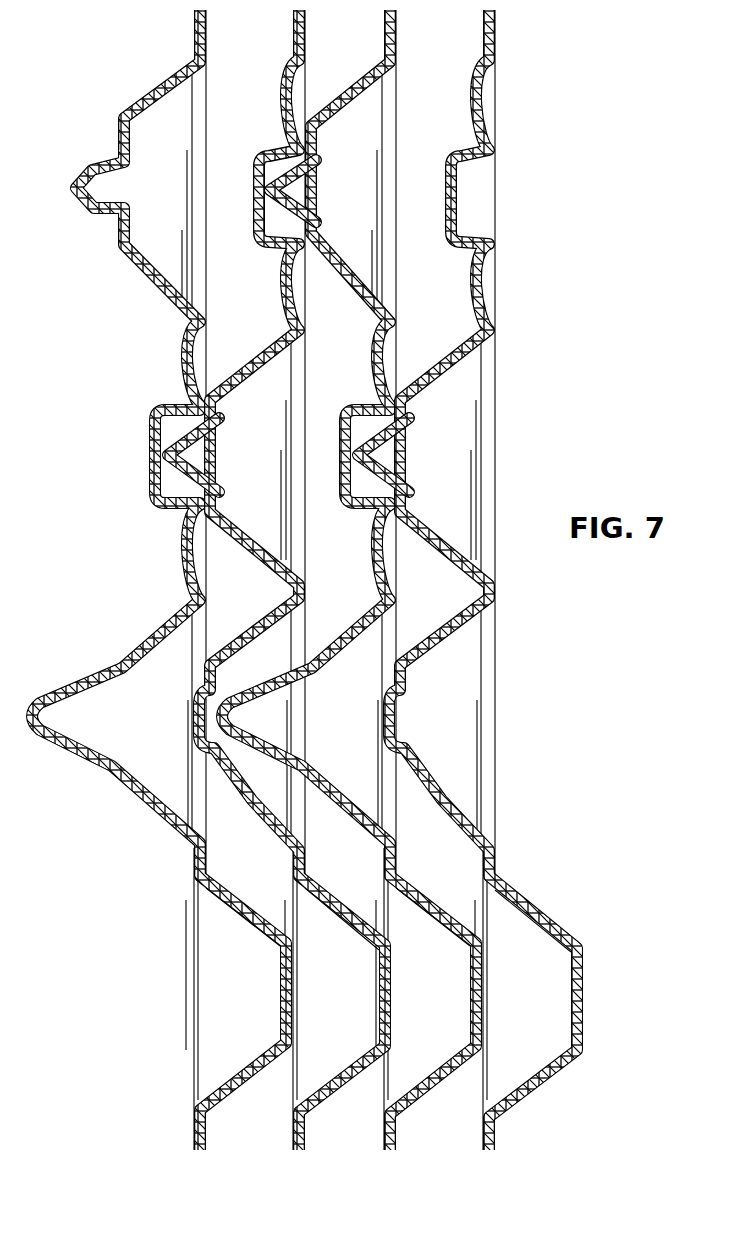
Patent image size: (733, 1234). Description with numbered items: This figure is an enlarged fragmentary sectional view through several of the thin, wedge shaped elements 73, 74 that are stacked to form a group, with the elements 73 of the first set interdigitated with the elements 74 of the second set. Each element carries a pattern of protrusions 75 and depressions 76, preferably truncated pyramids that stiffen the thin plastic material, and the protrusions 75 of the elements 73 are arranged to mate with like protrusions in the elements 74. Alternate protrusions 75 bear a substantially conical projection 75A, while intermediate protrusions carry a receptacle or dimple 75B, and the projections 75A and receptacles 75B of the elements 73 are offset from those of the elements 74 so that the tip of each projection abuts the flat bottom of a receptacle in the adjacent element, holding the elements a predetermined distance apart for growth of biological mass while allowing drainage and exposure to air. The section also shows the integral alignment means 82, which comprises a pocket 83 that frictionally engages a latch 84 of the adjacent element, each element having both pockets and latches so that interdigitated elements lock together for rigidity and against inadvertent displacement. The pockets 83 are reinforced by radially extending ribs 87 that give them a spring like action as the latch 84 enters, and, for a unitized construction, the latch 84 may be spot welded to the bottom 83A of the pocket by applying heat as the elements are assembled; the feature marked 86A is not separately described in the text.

The element of first set 73 is at (201, 1150).
The element of second set 74 is at (300, 1150).
The protrusion 75 is at (158, 818).
The cone shaped projection 75A is at (40, 696).
The receptacle or dimple 75B is at (197, 705).
The depression 76 is at (258, 918).
The alignment means 82 is at (274, 172).
The pocket 83 is at (168, 500).
The bottom of the pocket 83A is at (160, 418).
The latch 84 is at (96, 160).
The slot side wall 86A is at (157, 452).
The radially extending rib 87 is at (291, 274).